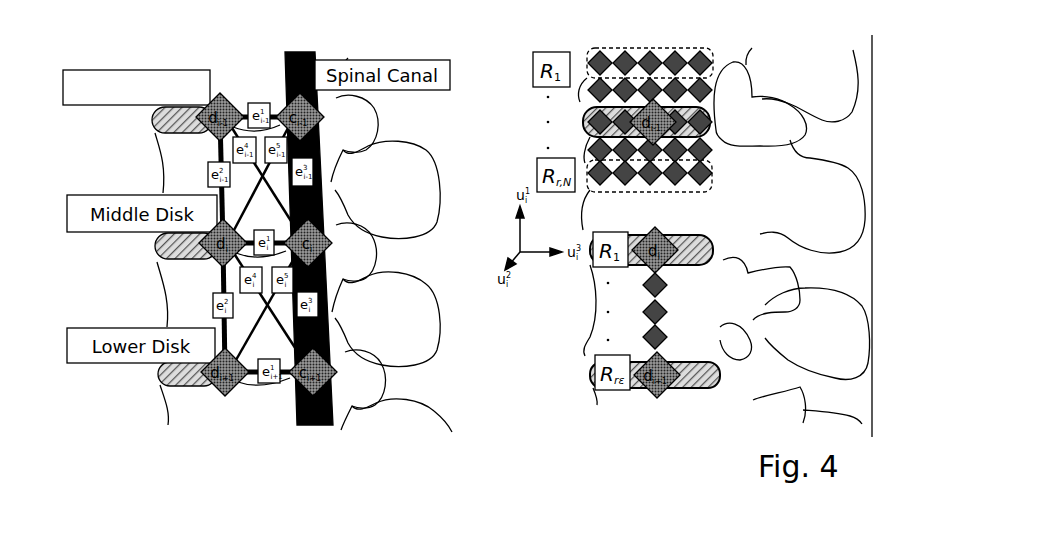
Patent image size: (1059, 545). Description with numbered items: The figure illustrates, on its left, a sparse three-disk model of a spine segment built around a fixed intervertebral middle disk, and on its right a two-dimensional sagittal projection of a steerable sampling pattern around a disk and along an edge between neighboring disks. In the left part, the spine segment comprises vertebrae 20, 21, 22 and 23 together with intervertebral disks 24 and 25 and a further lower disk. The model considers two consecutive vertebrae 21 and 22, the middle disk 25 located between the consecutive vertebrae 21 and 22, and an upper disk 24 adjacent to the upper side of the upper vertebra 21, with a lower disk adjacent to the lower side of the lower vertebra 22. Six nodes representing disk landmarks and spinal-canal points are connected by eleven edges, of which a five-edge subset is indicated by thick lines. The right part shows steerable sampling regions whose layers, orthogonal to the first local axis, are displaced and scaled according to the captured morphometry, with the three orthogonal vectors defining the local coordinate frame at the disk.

The vertebra 20 is at (158, 70).
The upper vertebra 21 is at (158, 168).
The lower vertebra 22 is at (163, 300).
The lower vertebra 23 is at (163, 410).
The upper disk 24 is at (153, 116).
The middle disk 25 is at (153, 246).